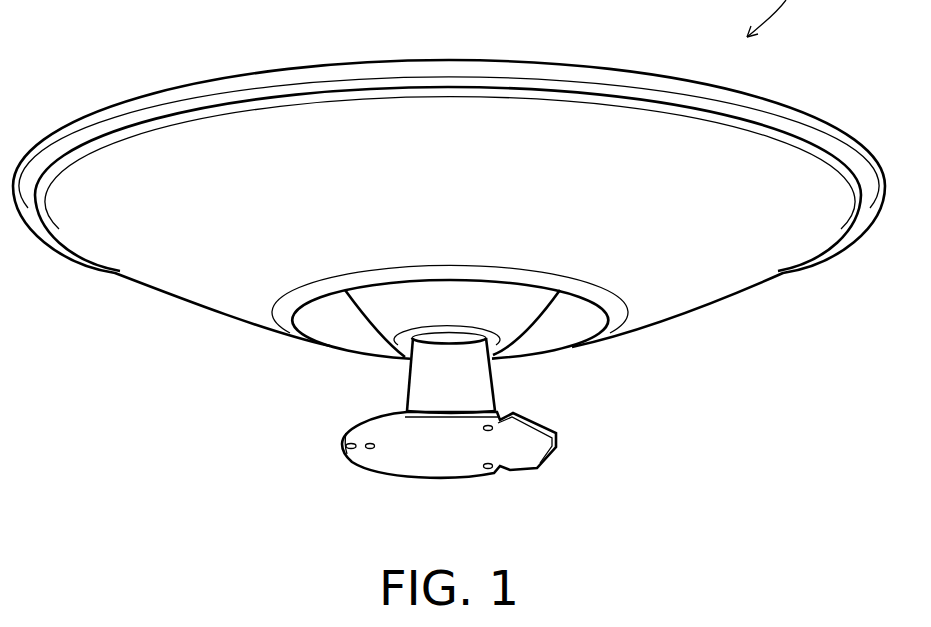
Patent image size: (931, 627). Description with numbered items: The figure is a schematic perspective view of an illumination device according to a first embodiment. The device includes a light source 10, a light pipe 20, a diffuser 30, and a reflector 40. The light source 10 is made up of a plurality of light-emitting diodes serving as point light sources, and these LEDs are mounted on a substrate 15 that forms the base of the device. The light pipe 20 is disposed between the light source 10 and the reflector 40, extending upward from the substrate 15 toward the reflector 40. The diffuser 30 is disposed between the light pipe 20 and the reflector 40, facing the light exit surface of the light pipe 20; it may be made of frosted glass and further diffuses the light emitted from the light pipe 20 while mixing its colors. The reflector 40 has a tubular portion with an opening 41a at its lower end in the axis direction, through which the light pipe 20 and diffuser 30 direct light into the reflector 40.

The light source 10 is at (496, 480).
The substrate 15 is at (447, 448).
The light pipe 20 is at (460, 388).
The diffuser 30 is at (448, 343).
The reflector 40 is at (726, 302).
The opening 41a is at (412, 352).